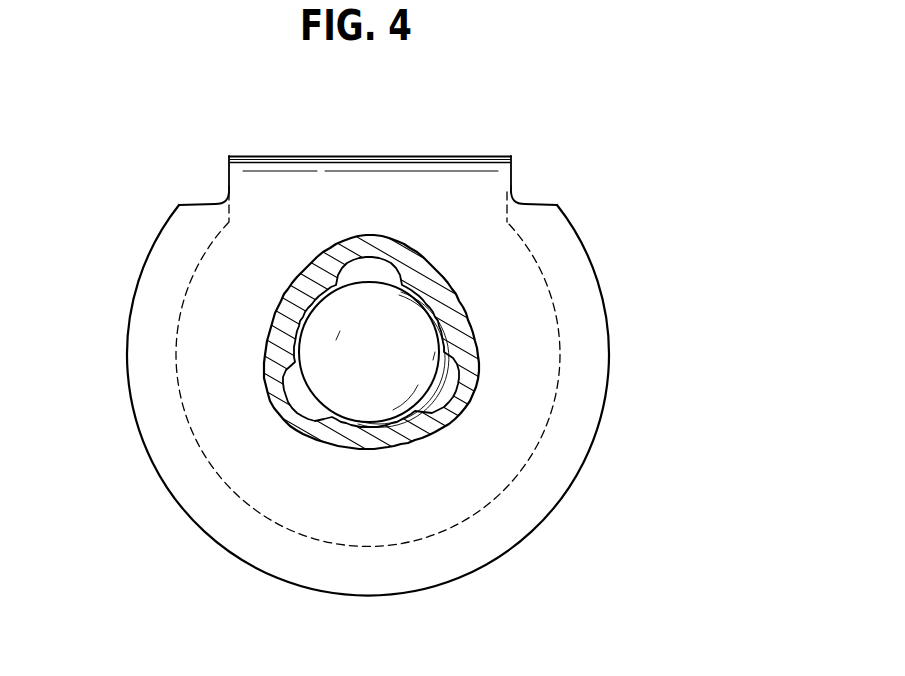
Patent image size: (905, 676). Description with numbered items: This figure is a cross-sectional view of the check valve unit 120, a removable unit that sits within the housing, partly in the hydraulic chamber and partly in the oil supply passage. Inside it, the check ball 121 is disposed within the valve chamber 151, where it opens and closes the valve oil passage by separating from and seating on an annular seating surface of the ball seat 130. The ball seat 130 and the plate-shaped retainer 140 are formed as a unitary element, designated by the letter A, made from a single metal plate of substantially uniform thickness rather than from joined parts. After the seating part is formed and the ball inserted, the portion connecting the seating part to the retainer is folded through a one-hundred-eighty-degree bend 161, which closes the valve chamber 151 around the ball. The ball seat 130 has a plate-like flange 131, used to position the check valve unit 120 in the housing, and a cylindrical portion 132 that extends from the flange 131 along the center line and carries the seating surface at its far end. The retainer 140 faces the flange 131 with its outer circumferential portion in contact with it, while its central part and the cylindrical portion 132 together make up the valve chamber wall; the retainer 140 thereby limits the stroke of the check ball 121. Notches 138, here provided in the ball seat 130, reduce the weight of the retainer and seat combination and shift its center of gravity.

The check valve unit 120 is at (126, 160).
The check ball 121 is at (336, 315).
The ball seat 130 is at (162, 488).
The flange 131 is at (192, 349).
The cylindrical portion 132 is at (267, 353).
The notches 138 is at (220, 202).
The retainer 140 is at (510, 482).
The valve chamber 151 is at (368, 425).
The 180° bend 161 is at (352, 157).
The retainer and seat A is at (477, 146).